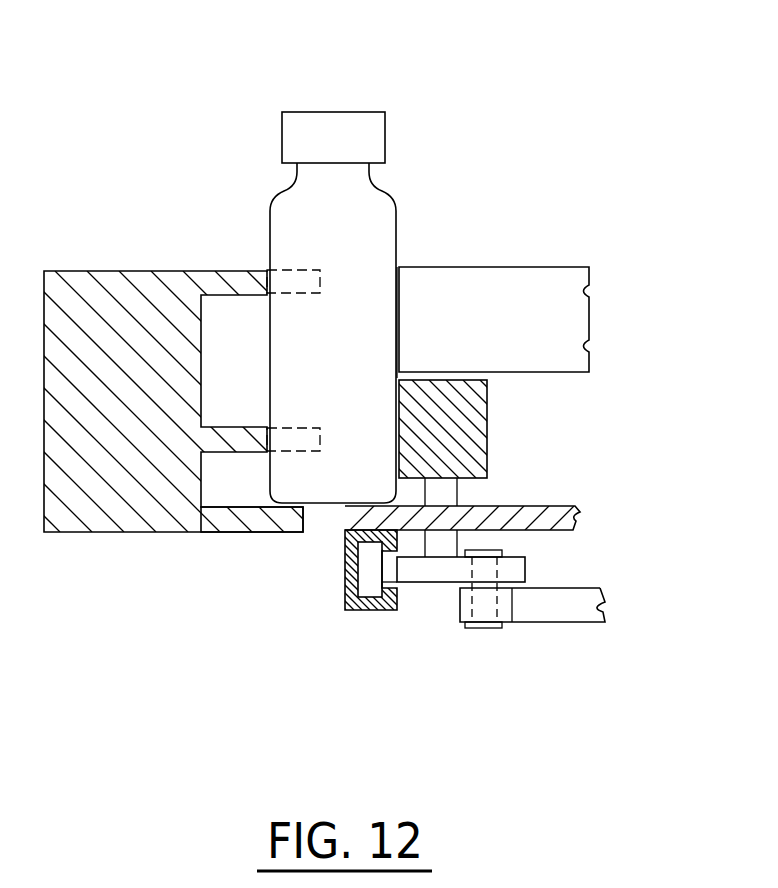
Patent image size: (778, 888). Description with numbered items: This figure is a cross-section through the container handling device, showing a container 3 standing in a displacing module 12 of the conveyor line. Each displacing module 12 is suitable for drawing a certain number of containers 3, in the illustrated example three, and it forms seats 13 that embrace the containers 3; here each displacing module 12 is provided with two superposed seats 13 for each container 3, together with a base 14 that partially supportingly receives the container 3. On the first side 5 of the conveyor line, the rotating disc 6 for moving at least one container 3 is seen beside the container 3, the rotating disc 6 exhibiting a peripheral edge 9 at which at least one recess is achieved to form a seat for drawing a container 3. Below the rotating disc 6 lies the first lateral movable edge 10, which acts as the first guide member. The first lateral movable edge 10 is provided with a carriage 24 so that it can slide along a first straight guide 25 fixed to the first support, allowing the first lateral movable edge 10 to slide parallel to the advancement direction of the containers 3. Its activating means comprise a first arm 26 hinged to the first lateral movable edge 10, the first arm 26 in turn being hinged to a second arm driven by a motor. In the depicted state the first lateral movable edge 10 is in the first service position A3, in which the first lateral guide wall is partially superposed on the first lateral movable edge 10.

The container 3 is at (332, 180).
The first side 5 is at (418, 131).
The rotating disc 6 is at (560, 318).
The peripheral edge 9 is at (410, 251).
The first lateral movable edge 10 is at (467, 418).
The displacing module 12 is at (89, 541).
The seat 13 is at (259, 411).
The base 14 is at (258, 523).
The carriage 24 is at (372, 583).
The first straight guide 25 is at (350, 608).
The first arm 26 is at (558, 612).
The first service position A3 is at (518, 467).